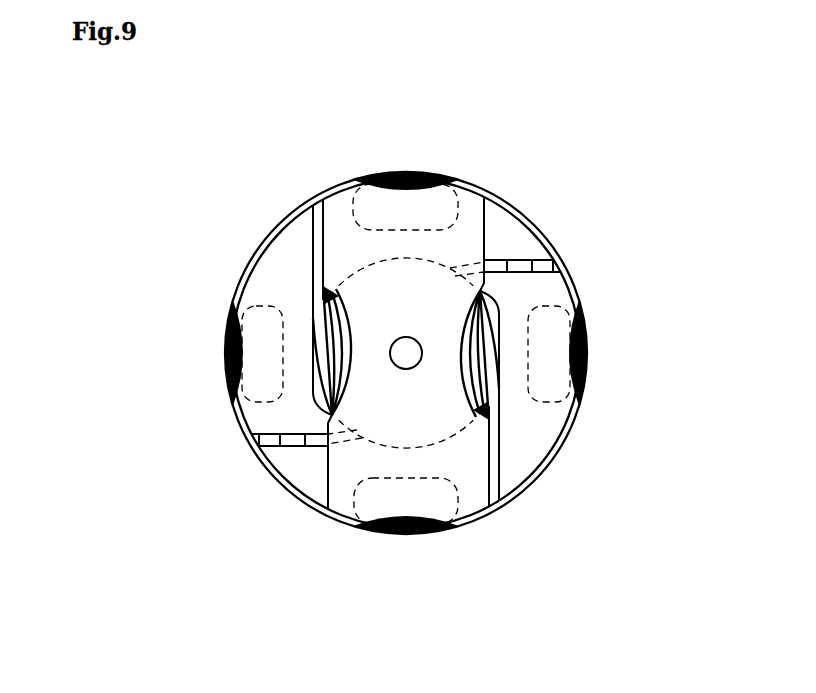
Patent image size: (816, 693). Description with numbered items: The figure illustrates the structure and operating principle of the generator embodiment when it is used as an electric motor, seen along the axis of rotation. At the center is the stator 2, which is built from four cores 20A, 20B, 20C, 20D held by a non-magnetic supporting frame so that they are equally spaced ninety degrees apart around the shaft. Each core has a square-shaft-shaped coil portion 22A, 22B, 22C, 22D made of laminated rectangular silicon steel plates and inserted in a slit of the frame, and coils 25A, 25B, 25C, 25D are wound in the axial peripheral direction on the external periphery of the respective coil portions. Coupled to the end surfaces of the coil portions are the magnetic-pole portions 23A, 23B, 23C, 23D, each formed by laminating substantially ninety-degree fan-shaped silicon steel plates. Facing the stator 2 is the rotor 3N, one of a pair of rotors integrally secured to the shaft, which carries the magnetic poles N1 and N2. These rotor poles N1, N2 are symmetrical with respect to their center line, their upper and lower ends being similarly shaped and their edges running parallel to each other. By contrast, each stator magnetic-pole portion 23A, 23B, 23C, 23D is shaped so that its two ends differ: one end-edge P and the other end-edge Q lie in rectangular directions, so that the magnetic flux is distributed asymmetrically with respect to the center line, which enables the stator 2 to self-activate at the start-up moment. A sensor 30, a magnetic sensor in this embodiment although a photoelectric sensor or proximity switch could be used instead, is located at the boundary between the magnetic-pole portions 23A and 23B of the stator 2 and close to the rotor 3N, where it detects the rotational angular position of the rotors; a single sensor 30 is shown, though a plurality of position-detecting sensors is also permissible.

The stator 2 is at (572, 248).
The rotor 3N is at (476, 386).
The core 20A is at (388, 118).
The core 20B is at (722, 380).
The core 20C is at (415, 592).
The core 20D is at (118, 365).
The coil portion 22A is at (385, 203).
The coil portion 22B is at (560, 381).
The coil portion 22C is at (387, 508).
The coil portion 22D is at (260, 366).
The magnetic-pole portion 23A is at (332, 195).
The magnetic-pole portion 23B is at (542, 420).
The magnetic-pole portion 23C is at (323, 505).
The magnetic-pole portion 23D is at (268, 415).
The coil 25A is at (420, 173).
The coil 25B is at (585, 352).
The coil 25C is at (436, 532).
The coil 25D is at (233, 330).
The sensor 30 is at (552, 264).
The end-edge P is at (540, 238).
The end-edge Q is at (323, 240).
The magnetic pole N1 is at (507, 198).
The magnetic pole N2 is at (468, 474).